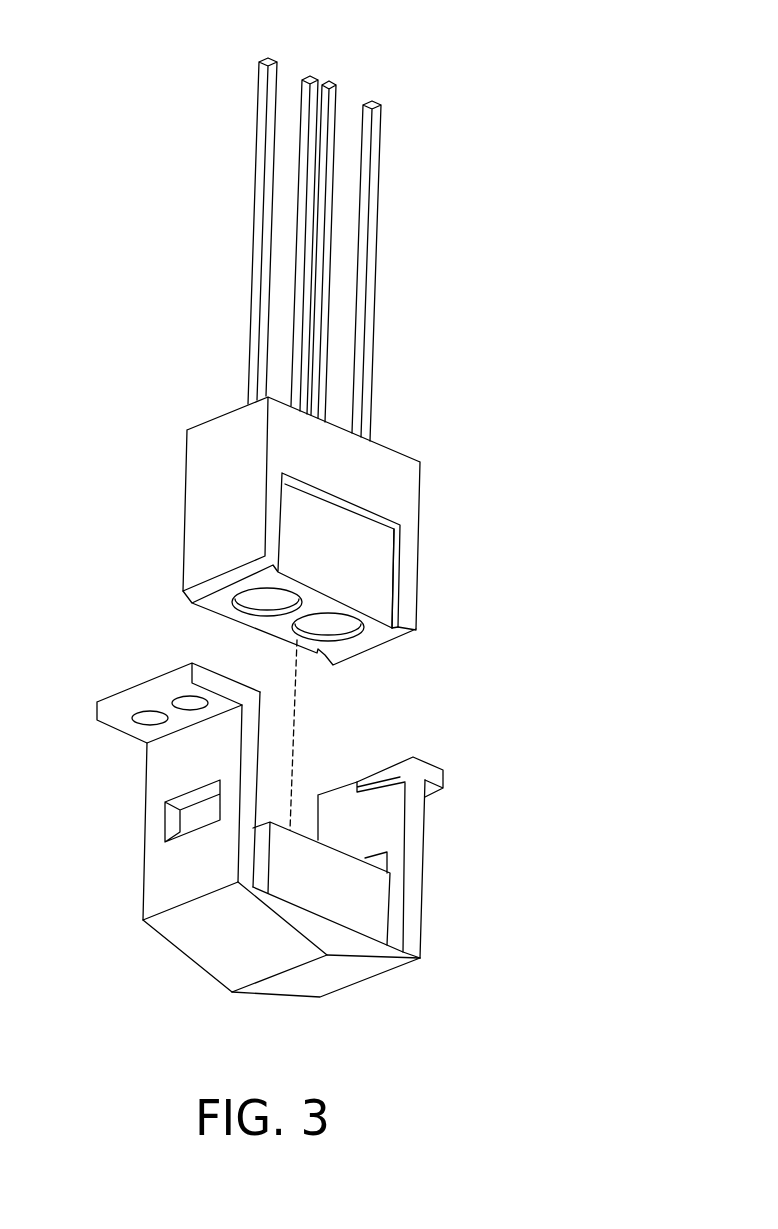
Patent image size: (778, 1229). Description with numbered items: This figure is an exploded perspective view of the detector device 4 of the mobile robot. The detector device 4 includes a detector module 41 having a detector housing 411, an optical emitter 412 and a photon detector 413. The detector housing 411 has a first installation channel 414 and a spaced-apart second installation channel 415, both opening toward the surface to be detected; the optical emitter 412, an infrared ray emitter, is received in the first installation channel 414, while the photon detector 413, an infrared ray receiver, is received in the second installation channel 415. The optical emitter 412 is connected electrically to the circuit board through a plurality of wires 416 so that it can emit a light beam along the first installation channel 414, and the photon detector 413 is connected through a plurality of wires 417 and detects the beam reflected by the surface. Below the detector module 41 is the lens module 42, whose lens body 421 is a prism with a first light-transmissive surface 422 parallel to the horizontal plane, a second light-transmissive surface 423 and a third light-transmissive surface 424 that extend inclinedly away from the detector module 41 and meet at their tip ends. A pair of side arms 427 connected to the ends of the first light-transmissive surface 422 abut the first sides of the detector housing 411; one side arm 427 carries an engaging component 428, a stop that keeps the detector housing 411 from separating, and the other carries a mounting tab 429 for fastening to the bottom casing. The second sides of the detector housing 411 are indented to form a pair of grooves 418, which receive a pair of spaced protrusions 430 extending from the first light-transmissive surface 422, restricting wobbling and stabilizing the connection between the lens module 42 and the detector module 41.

The detector device 4 is at (112, 360).
The detector module 41 is at (430, 447).
The detector housing 411 is at (212, 482).
The optical emitter 412 is at (270, 603).
The photon detector 413 is at (335, 625).
The first installation channel 414 is at (242, 590).
The second installation channel 415 is at (365, 625).
The wires 416 is at (308, 82).
The wires 417 is at (373, 112).
The grooves 418 is at (232, 622).
The lens module 42 is at (462, 754).
The lens body 421 is at (192, 990).
The first light-transmissive surface 422 is at (357, 930).
The second light-transmissive surface 423 is at (218, 937).
The third light-transmissive surface 424 is at (330, 975).
The side arms 427 is at (170, 777).
The engaging component 428 is at (388, 780).
The mounting tab 429 is at (143, 692).
The protrusions 430 is at (342, 868).